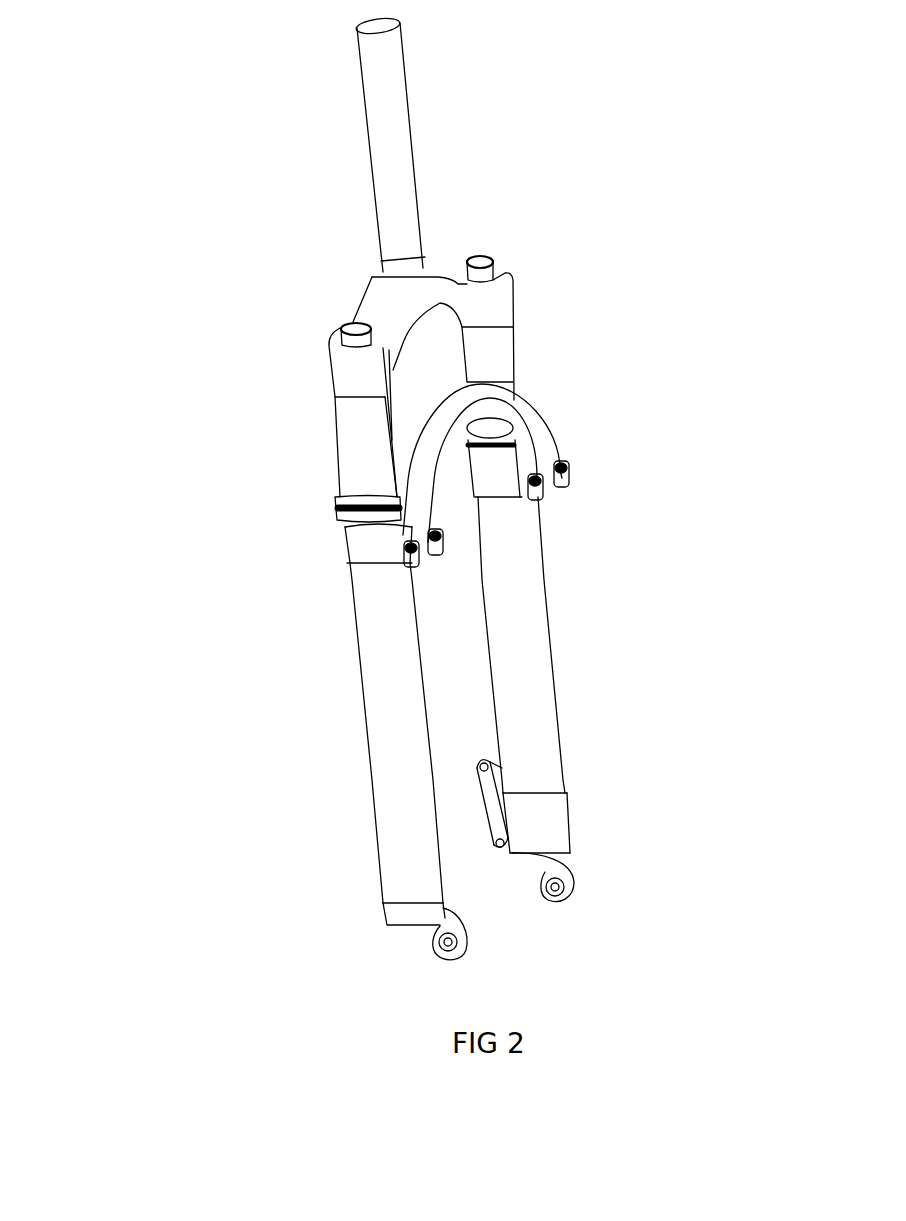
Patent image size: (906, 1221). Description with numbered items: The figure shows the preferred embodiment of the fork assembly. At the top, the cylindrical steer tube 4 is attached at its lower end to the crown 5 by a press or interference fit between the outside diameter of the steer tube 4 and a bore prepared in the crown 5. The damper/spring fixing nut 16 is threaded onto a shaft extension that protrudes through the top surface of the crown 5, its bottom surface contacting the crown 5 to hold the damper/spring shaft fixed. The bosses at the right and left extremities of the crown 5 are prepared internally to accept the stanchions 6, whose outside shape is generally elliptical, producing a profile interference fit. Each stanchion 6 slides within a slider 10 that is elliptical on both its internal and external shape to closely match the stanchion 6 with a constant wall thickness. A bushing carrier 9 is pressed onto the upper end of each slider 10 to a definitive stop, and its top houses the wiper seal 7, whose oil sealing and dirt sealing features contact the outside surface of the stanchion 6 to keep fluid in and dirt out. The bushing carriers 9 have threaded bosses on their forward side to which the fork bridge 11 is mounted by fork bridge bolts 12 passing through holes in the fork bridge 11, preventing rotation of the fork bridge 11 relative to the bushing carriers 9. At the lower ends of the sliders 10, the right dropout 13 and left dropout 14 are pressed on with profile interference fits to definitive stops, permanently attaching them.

The steer tube 4 is at (408, 145).
The crown 5 is at (438, 277).
The damper/spring fixing nut 16 is at (497, 267).
The stanchion 6 is at (343, 431).
The wiper seal 7 is at (340, 503).
The bushing carrier 9 is at (358, 542).
The slider 10 is at (372, 717).
The fork bridge 11 is at (540, 426).
The fork bridge bolt 12 is at (568, 478).
The right dropout 13 is at (388, 912).
The left dropout 14 is at (572, 820).